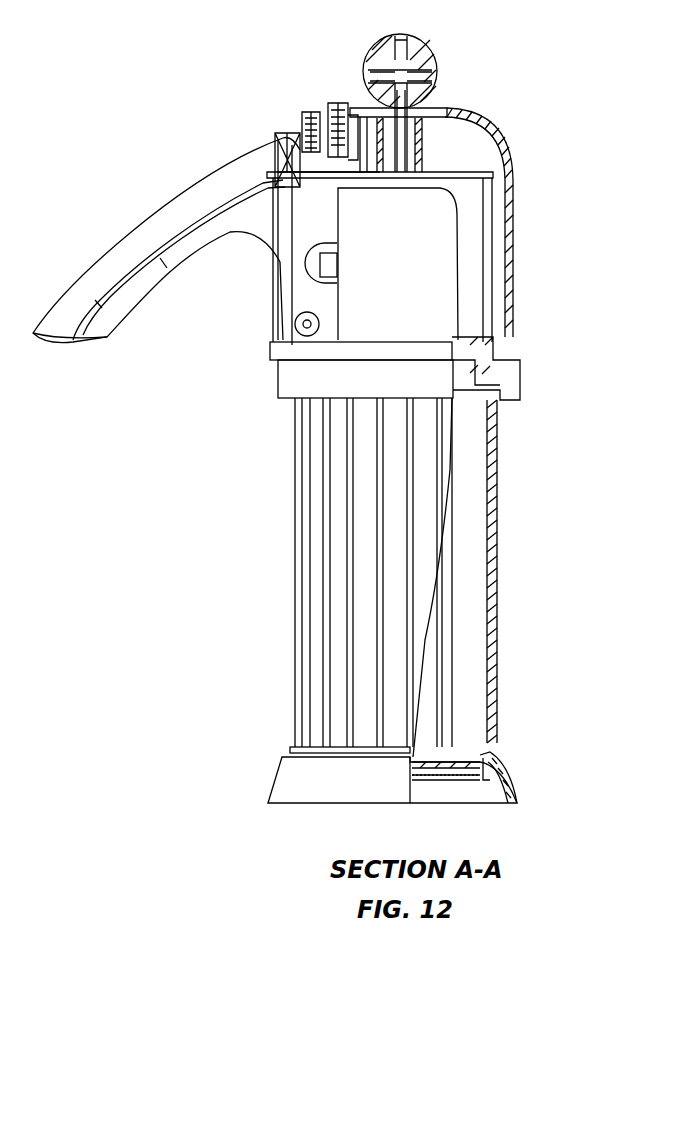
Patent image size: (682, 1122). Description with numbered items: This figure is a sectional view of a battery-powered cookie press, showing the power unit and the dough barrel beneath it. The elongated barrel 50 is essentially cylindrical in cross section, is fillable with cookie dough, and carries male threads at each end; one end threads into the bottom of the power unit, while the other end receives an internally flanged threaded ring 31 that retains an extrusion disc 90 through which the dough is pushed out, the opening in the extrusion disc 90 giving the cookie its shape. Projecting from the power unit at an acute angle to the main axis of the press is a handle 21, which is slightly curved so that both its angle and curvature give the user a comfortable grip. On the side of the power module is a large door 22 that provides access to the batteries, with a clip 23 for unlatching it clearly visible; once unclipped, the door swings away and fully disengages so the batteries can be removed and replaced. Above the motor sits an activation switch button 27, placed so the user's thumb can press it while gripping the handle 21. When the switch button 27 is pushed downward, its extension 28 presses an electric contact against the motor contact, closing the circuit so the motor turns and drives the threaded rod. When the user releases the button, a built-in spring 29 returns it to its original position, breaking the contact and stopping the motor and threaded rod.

The handle 21 is at (155, 213).
The door 22 is at (355, 297).
The clip 23 is at (312, 266).
The activation switch button 27 is at (340, 102).
The extension 28 is at (290, 142).
The spring 29 is at (300, 124).
The threaded ring 31 is at (513, 777).
The barrel 50 is at (498, 578).
The extrusion disc 90 is at (450, 783).